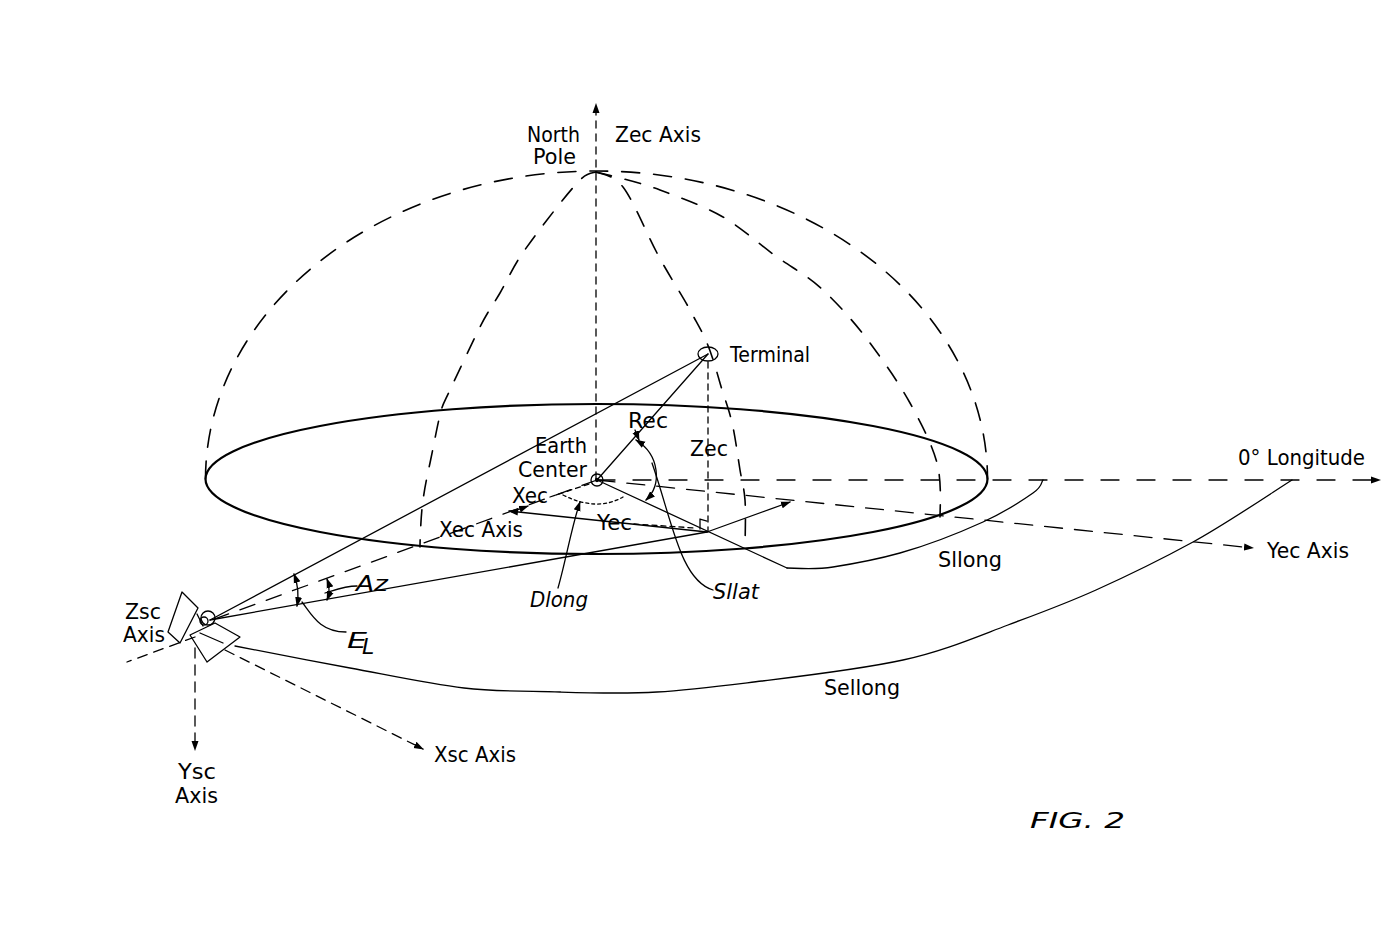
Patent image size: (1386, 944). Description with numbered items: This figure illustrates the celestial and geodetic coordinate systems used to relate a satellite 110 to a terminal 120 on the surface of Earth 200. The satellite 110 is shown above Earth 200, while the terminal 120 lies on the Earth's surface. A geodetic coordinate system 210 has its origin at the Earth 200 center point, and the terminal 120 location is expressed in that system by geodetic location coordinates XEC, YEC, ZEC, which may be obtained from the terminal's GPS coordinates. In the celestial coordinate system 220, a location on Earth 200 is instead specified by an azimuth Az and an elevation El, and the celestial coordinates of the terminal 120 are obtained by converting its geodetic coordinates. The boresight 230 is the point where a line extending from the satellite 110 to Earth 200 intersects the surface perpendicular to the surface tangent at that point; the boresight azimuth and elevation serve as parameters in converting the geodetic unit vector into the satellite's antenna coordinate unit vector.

The satellite 110 is at (206, 610).
The terminal 120 is at (705, 350).
The Earth 200 is at (860, 250).
The geodetic coordinate system 210 is at (588, 436).
The celestial coordinate system 220 is at (178, 665).
The boresight 230 is at (420, 545).